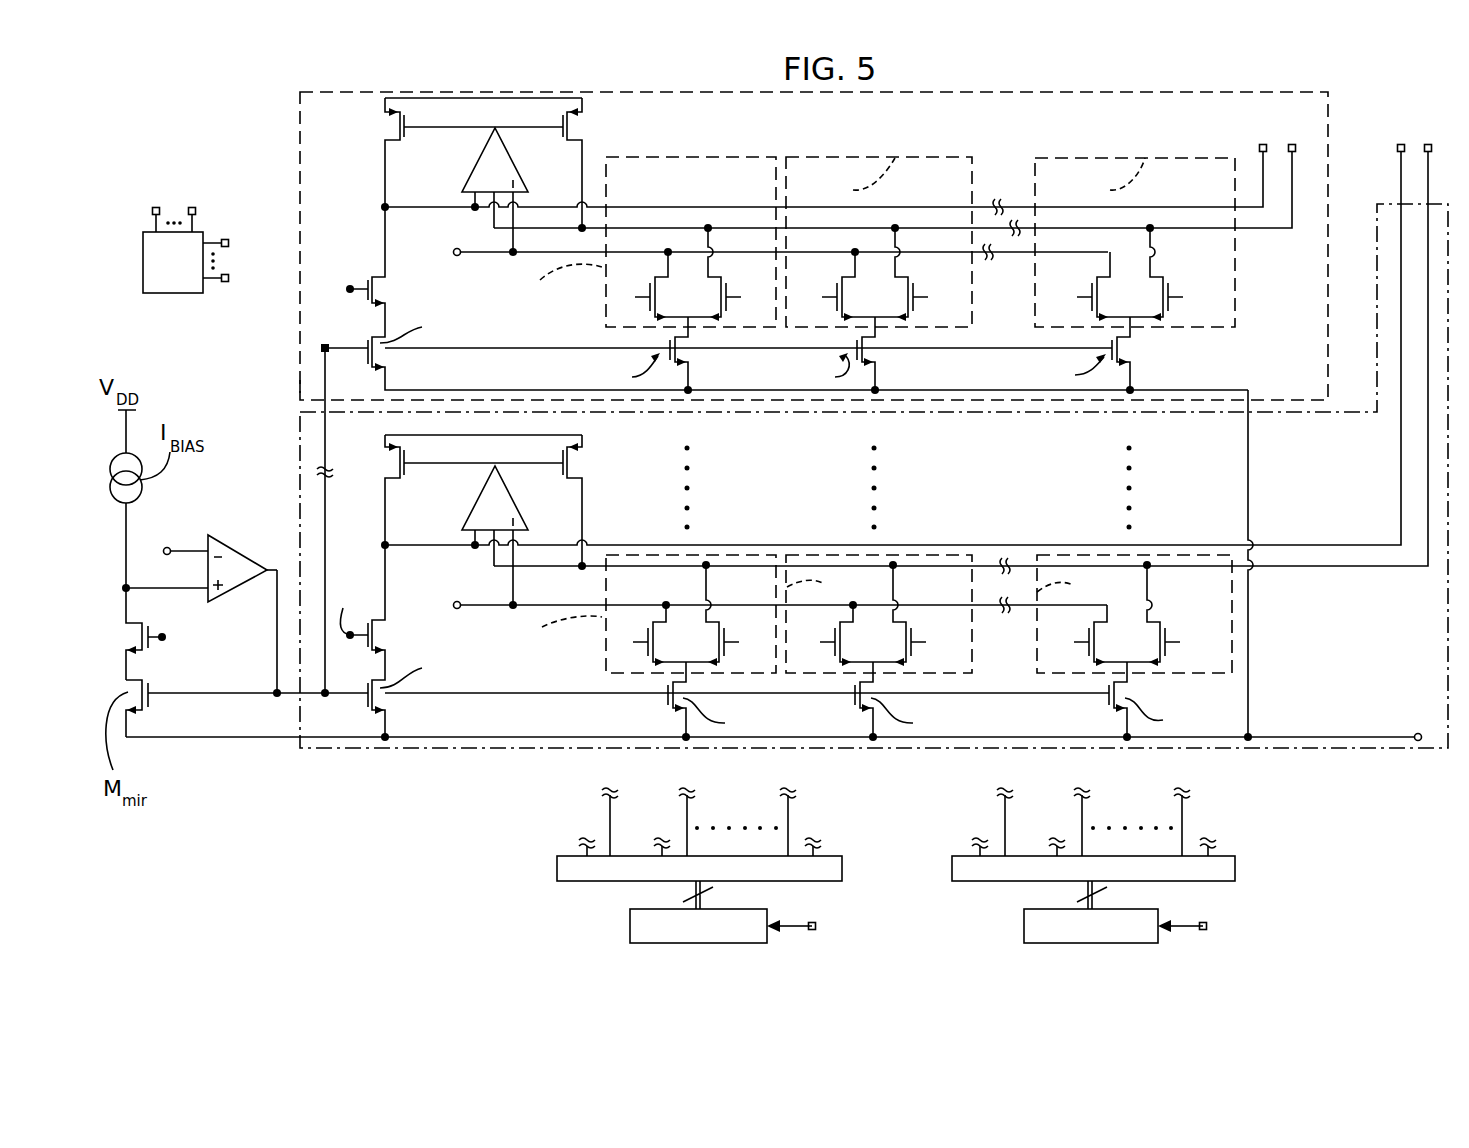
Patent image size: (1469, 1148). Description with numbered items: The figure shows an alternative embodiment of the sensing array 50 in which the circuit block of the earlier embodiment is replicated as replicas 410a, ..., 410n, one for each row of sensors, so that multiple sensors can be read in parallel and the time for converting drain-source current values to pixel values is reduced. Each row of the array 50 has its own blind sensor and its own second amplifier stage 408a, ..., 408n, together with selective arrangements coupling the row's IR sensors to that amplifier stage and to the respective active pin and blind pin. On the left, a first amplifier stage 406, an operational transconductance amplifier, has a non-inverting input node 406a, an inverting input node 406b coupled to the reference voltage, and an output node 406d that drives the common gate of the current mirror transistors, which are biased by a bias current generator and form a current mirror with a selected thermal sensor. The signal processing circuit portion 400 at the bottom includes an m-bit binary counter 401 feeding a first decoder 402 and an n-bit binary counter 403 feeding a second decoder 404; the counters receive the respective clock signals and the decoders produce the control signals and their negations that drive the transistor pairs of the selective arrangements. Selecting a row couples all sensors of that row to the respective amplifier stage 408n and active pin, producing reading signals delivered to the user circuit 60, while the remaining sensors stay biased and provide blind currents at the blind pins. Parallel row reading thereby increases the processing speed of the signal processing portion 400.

The replica of circuit block 410a is at (333, 153).
The replica of circuit block 410n is at (328, 740).
The second amplifier stage 408a is at (488, 147).
The second amplifier stage 408n is at (488, 485).
The user circuit 60 is at (188, 276).
The array 50 is at (262, 375).
The first amplifier stage 406 is at (243, 563).
The non-inverting input node 406a is at (130, 592).
The inverting input node 406b is at (163, 553).
The output node 406d is at (277, 697).
The signal processing circuit portion 400 is at (445, 828).
The m-bit binary counter 401 is at (637, 941).
The first decoder 402 is at (583, 873).
The n-bit binary counter 403 is at (1030, 941).
The second decoder 404 is at (978, 873).